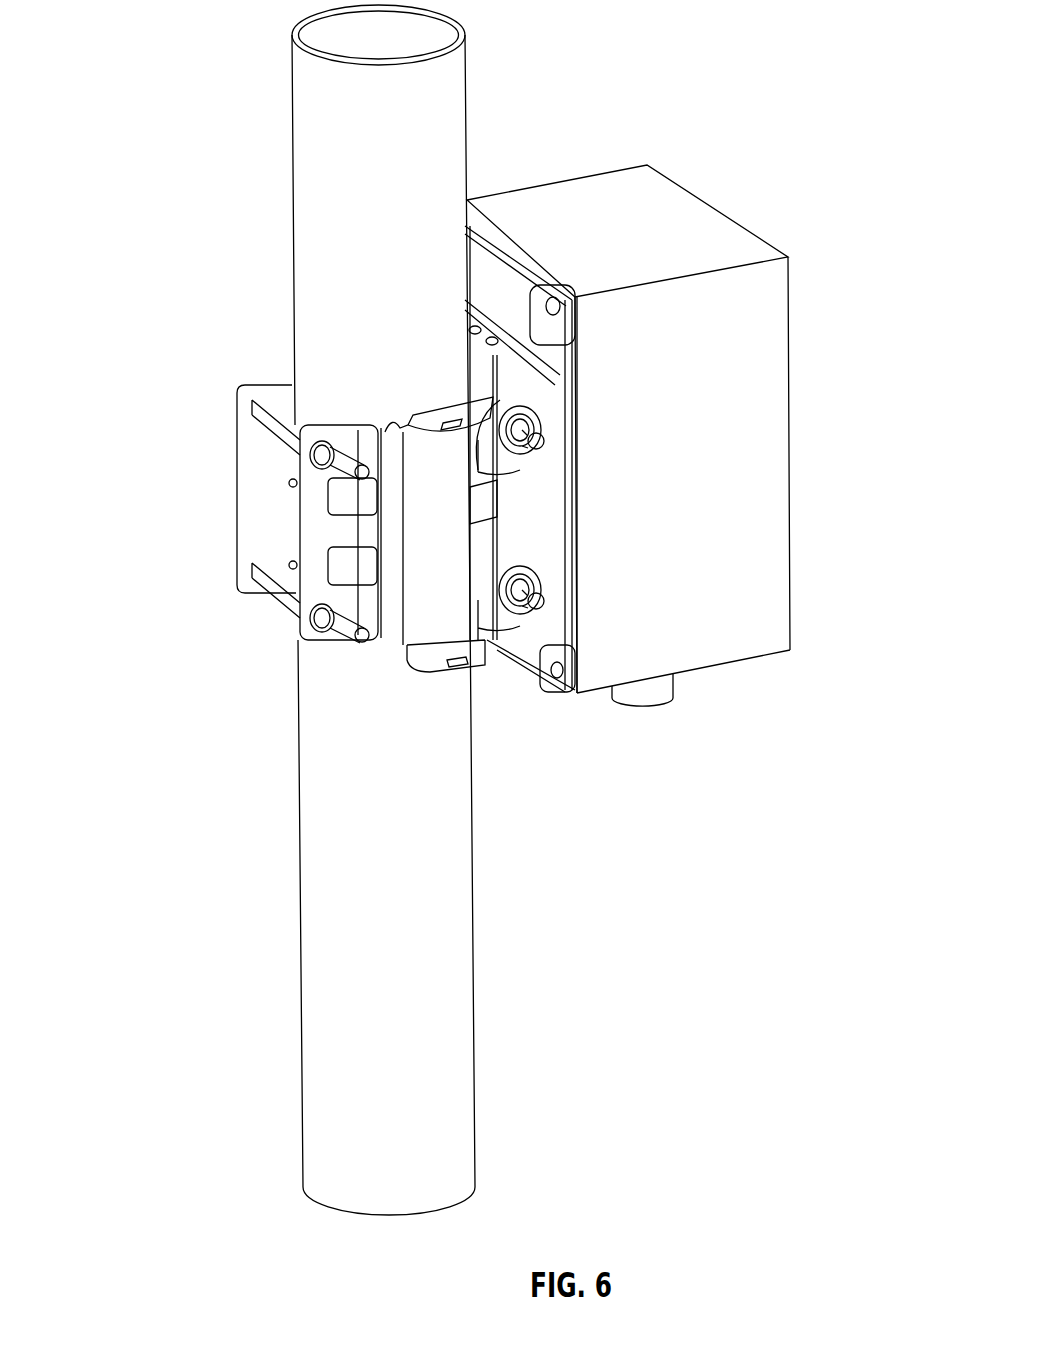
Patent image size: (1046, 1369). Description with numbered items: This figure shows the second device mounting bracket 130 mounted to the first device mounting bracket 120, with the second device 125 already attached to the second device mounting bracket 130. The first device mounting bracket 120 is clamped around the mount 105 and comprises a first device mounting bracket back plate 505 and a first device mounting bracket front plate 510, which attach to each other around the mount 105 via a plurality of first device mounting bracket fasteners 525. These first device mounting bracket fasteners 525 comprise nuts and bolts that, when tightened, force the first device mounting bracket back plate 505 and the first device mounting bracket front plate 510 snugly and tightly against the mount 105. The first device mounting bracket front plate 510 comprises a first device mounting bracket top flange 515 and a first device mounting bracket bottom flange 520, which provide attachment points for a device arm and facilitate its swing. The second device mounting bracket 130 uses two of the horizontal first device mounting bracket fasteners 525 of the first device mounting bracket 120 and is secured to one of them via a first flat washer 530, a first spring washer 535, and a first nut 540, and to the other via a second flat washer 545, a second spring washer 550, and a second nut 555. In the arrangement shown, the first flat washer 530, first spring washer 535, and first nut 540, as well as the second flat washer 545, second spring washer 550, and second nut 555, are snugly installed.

The mount 105 is at (292, 130).
The first device mounting bracket 120 is at (198, 506).
The second device 125 is at (652, 186).
The second device mounting bracket 130 is at (540, 530).
The first device mounting bracket back plate 505 is at (237, 445).
The first device mounting bracket front plate 510 is at (320, 518).
The first device mounting bracket top flange 515 is at (450, 414).
The first device mounting bracket bottom flange 520 is at (455, 678).
The first device mounting bracket fasteners 525 is at (345, 460).
The first flat washer 530 is at (538, 415).
The first spring washer 535 is at (530, 395).
The first nut 540 is at (488, 448).
The second flat washer 545 is at (545, 570).
The second spring washer 550 is at (500, 580).
The second nut 555 is at (490, 618).